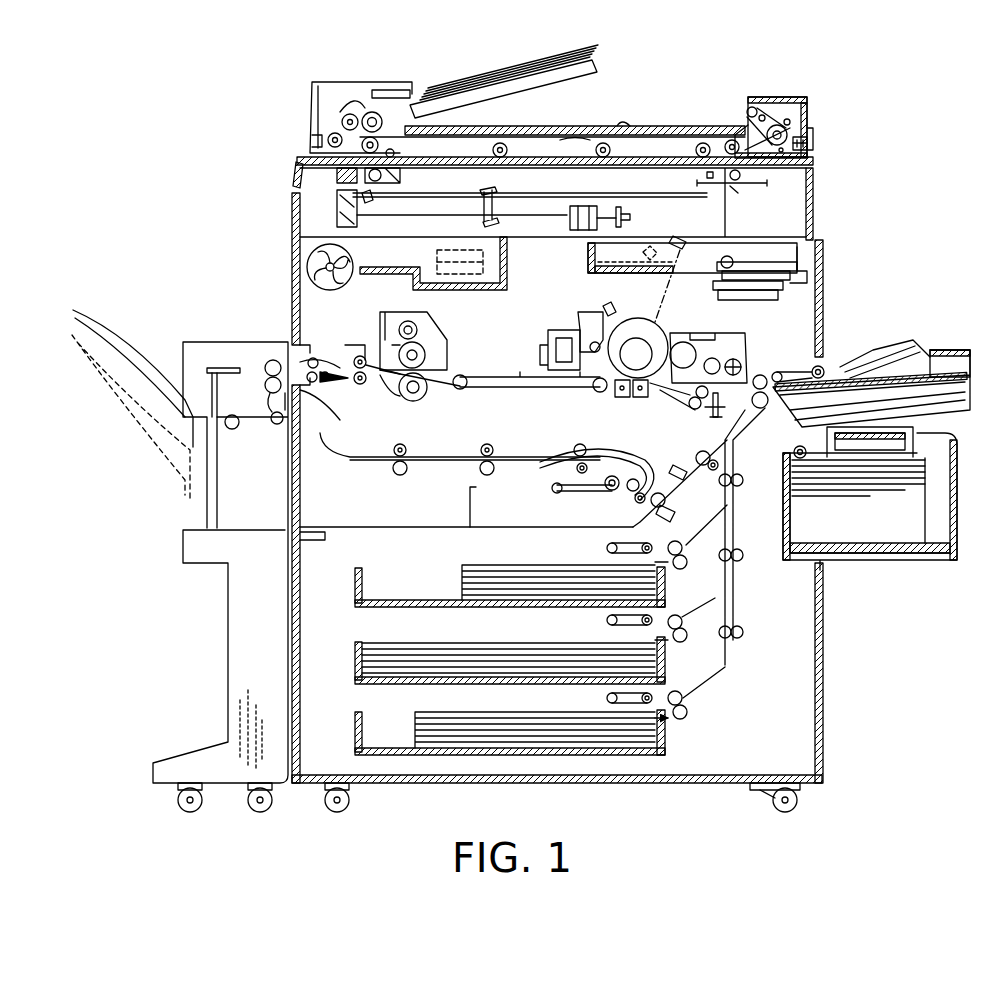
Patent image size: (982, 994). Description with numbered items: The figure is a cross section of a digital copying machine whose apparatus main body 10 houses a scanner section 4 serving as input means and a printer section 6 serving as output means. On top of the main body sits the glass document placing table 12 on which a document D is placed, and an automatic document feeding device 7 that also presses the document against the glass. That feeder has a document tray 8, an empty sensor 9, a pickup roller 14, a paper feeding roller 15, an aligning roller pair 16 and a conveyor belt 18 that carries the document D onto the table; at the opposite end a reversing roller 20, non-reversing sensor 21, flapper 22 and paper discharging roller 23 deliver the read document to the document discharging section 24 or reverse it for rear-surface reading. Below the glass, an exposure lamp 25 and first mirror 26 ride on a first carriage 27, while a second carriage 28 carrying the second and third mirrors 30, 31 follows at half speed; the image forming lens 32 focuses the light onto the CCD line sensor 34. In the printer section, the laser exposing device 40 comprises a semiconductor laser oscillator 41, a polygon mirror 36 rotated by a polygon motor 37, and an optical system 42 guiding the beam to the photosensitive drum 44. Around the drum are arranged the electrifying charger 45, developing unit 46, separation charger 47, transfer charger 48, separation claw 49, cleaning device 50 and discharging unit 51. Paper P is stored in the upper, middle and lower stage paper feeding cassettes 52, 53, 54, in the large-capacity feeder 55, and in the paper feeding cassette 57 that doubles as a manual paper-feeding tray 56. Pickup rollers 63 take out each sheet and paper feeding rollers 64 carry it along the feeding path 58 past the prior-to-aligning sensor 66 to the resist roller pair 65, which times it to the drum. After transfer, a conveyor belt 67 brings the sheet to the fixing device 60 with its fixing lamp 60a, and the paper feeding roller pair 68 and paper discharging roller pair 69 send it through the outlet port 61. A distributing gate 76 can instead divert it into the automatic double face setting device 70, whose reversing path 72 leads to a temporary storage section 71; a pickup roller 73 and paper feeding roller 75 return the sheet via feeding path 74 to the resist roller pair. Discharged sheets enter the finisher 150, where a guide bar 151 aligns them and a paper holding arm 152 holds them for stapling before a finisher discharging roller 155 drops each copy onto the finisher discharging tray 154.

The scanner section 4 is at (540, 187).
The printer section 6 is at (755, 327).
The automatic document feeding device 7 is at (448, 82).
The document tray 8 is at (480, 100).
The empty sensor 9 is at (397, 110).
The apparatus main body 10 is at (824, 658).
The document placing table 12 is at (680, 126).
The pickup roller 14 is at (356, 90).
The paper feeding roller 15 is at (342, 119).
The aligning roller pair 16 is at (326, 146).
The conveyor belt 18 is at (572, 126).
The reversing roller 20 is at (814, 135).
The non-reversing sensor 21 is at (810, 148).
The flapper 22 is at (776, 100).
The paper discharging roller 23 is at (750, 108).
The document discharging section 24 is at (608, 124).
The exposure lamp 25 is at (400, 178).
The first mirror 26 is at (373, 199).
The first carriage 27 is at (338, 173).
The second carriage 28 is at (337, 200).
The second mirror 30 is at (340, 216).
The third mirror 31 is at (362, 239).
The image forming lens 32 is at (585, 206).
The CCD line sensor 34 is at (625, 217).
The polygon mirror 36 is at (765, 262).
The polygon motor 37 is at (780, 290).
The laser exposing device 40 is at (812, 259).
The semiconductor laser oscillator 41 is at (726, 256).
The optical system 42 is at (612, 253).
The photosensitive drum 44 is at (670, 333).
The electrifying charger 45 is at (612, 312).
The developing unit 46 is at (770, 347).
The separation charger 47 is at (615, 402).
The transfer charger 48 is at (588, 457).
The separation claw 49 is at (542, 378).
The cleaning device 50 is at (570, 323).
The discharging unit 51 is at (590, 325).
The upper stage paper feeding cassette 52 is at (357, 588).
The middle stage paper feeding cassette 53 is at (357, 660).
The lower stage paper feeding cassette 54 is at (357, 738).
The large-capacity feeder 55 is at (890, 537).
The manual paper-feeding tray 56 is at (887, 358).
The paper feeding cassette 57 is at (950, 350).
The feeding path 58 is at (484, 367).
The fixing device 60 is at (428, 320).
The fixing lamp 60a is at (398, 326).
The outlet port 61 is at (287, 345).
The pickup rollers 63 is at (823, 368).
The paper feeding rollers 64 is at (762, 375).
The resist roller pair 65 is at (690, 404).
The prior-to-aligning sensor 66 is at (712, 416).
The conveyor belt 67 is at (463, 390).
The paper feeding roller pair 68 is at (360, 385).
The paper discharging roller pair 69 is at (314, 356).
The automatic double face setting device 70 is at (348, 470).
The temporary storage section 71 is at (509, 507).
The reversing path 72 is at (376, 465).
The pickup roller 73 is at (580, 502).
The feeding path 74 is at (675, 470).
The paper feeding roller 75 is at (640, 503).
The distributing gate 76 is at (338, 370).
The finisher 150 is at (178, 362).
The guide bar 151 is at (220, 368).
The paper holding arm 152 is at (271, 414).
The finisher discharging tray 154 is at (91, 330).
The finisher discharging roller 155 is at (234, 430).
The document D is at (548, 80).
The paper P is at (476, 575).